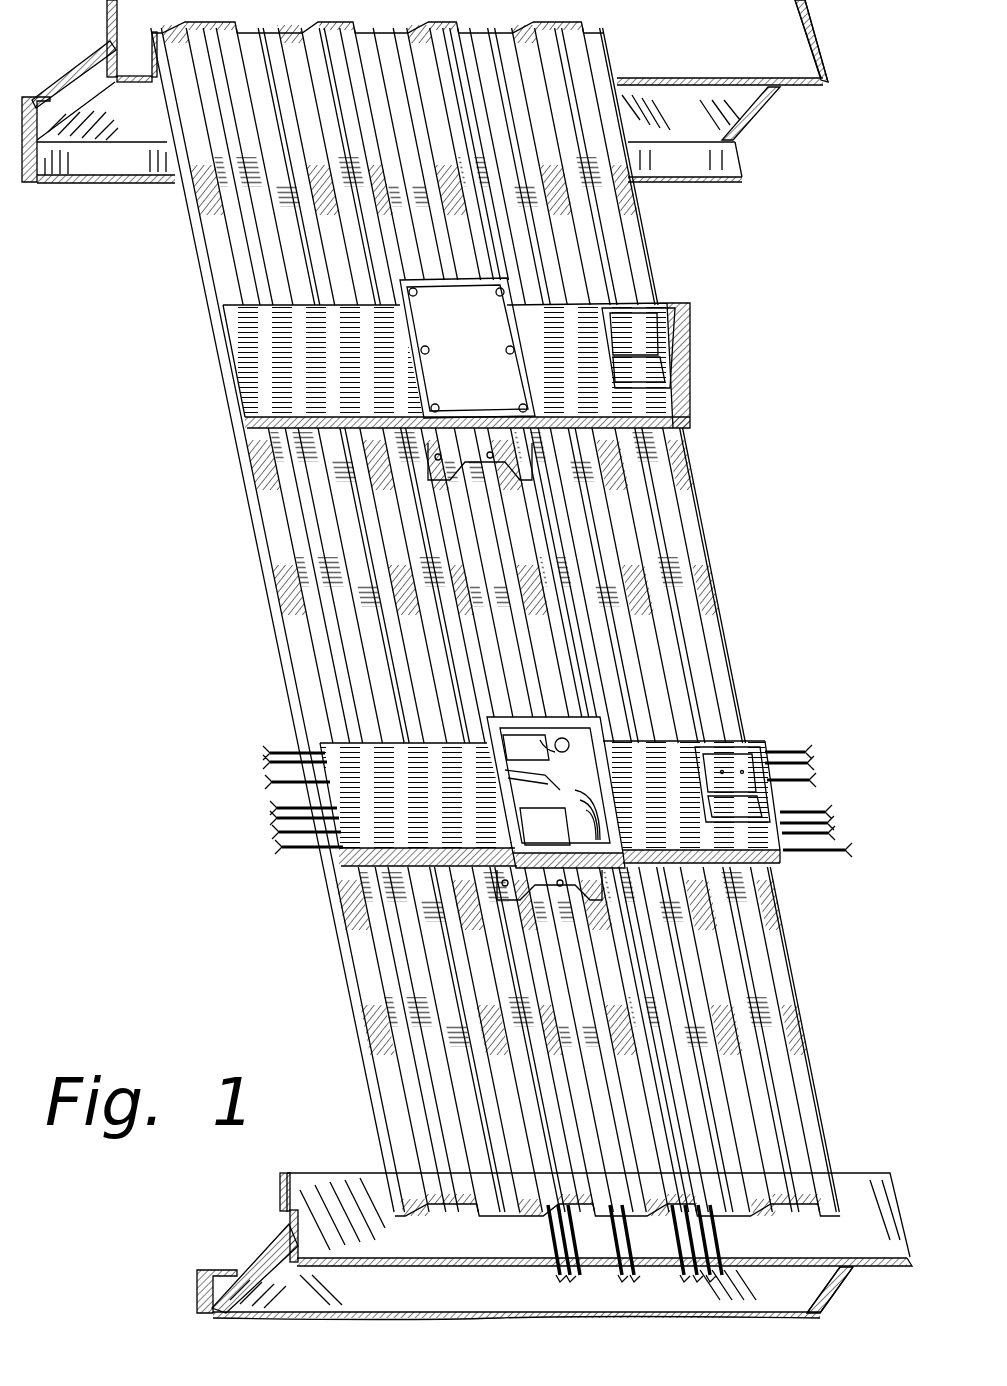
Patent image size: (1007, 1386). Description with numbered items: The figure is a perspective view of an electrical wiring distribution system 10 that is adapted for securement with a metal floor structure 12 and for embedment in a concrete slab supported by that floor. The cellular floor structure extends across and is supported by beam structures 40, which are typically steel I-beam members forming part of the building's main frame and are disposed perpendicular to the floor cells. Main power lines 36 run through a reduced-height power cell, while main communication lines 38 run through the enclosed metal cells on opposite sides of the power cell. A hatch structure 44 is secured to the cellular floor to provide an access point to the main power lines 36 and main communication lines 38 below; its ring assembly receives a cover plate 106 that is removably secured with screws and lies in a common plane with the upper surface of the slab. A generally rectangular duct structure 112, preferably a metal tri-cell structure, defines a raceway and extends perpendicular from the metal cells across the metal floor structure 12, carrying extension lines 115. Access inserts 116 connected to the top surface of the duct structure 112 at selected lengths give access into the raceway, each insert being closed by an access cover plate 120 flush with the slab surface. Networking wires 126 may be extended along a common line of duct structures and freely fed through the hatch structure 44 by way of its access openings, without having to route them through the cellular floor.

The electrical wiring distribution system 10 is at (500, 667).
The metal floor structure 12 is at (737, 580).
The main power lines 36 is at (624, 1284).
The main communication lines 38 is at (565, 1282).
The beam structures 40 is at (700, 160).
The hatch structure 44 is at (420, 306).
The cover plate 106 is at (477, 349).
The duct structure 112 is at (278, 388).
The extension lines 115 is at (290, 783).
The access inserts 116 is at (652, 365).
The access cover plate 120 is at (718, 776).
The networking wires 126 is at (522, 840).